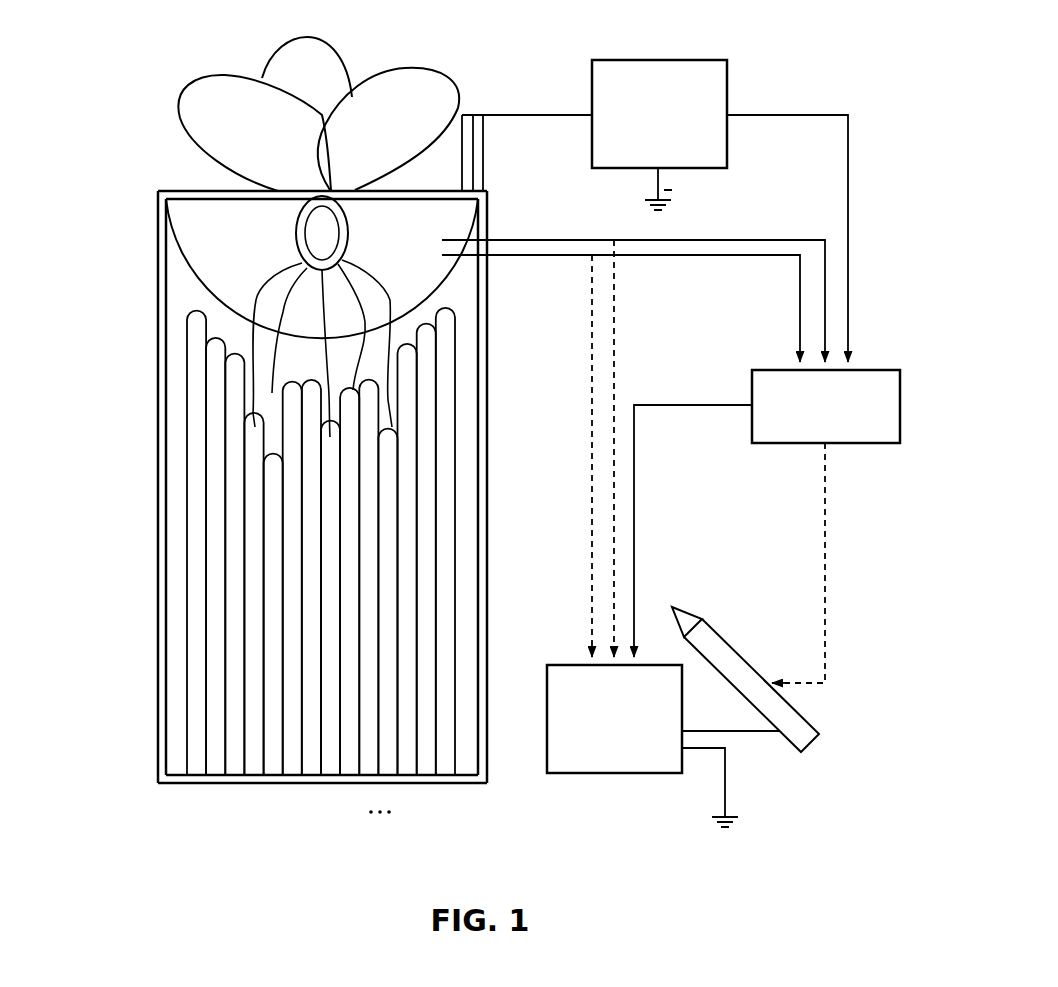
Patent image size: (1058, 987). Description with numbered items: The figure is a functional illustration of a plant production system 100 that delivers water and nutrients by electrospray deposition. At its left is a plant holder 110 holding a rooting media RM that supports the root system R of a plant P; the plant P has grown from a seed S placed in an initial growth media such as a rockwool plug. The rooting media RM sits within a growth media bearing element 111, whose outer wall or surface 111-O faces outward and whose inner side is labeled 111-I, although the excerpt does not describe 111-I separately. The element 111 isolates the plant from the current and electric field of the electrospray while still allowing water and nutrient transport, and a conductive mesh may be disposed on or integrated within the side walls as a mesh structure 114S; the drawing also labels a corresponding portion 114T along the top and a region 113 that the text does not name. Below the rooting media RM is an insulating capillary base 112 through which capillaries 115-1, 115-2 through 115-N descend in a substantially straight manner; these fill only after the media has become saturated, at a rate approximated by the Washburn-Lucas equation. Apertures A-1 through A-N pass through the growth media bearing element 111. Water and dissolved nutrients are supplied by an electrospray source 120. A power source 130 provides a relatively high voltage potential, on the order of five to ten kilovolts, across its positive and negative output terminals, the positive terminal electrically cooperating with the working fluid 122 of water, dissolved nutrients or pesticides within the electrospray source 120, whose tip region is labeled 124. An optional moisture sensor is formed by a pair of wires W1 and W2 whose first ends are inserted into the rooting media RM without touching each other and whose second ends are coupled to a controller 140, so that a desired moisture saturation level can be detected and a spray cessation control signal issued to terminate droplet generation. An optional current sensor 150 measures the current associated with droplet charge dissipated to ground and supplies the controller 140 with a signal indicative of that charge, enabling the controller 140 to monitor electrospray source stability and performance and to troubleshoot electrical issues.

The plant production system 100 is at (873, 307).
The plant holder 110 is at (128, 191).
The growth media bearing element 111 is at (170, 211).
The inner electrode 111-I is at (428, 288).
The outer wall of growth media bearing element 111-O is at (480, 250).
The insulating capillary base 112 is at (488, 442).
The gap / spacing 113 is at (177, 500).
The top edge of container 114T is at (190, 191).
The mesh structure 114S is at (157, 542).
The first capillary 115-1 is at (197, 777).
The second capillary 115-2 is at (217, 777).
The Nth capillary 115-N is at (448, 777).
The electrospray source 120 is at (728, 650).
The working fluid 122 is at (787, 752).
The probe tip 124 is at (672, 607).
The power source 130 is at (595, 761).
The controller 140 is at (807, 433).
The current sensor 150 is at (640, 156).
The first wire W1 is at (728, 236).
The second wire W2 is at (668, 257).
The plant P is at (379, 136).
The seed S is at (314, 246).
The root system R is at (267, 270).
The rooting media RM is at (200, 233).
The first aperture A-1 is at (195, 292).
The Nth aperture A-N is at (455, 290).